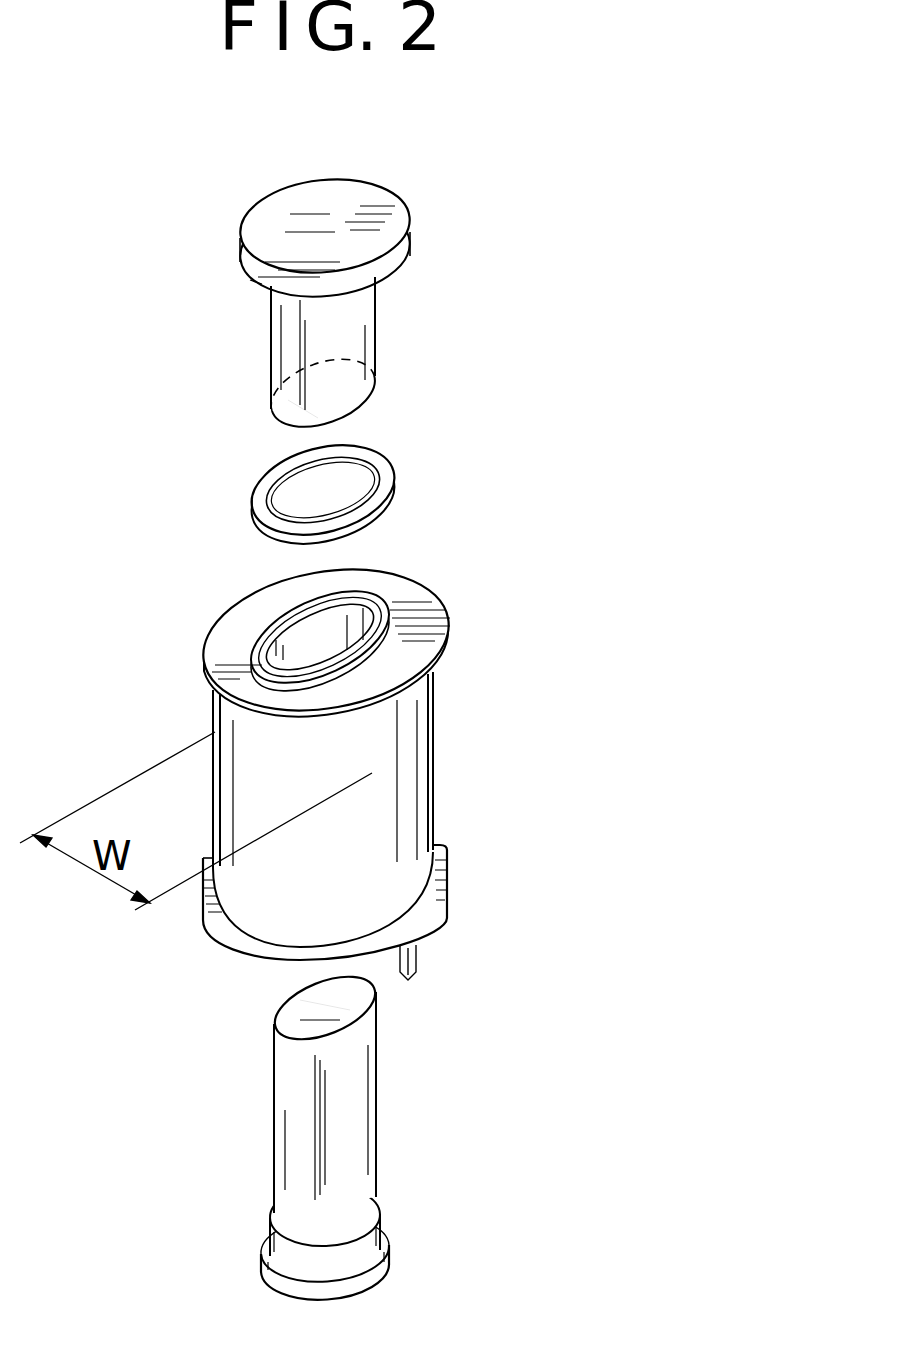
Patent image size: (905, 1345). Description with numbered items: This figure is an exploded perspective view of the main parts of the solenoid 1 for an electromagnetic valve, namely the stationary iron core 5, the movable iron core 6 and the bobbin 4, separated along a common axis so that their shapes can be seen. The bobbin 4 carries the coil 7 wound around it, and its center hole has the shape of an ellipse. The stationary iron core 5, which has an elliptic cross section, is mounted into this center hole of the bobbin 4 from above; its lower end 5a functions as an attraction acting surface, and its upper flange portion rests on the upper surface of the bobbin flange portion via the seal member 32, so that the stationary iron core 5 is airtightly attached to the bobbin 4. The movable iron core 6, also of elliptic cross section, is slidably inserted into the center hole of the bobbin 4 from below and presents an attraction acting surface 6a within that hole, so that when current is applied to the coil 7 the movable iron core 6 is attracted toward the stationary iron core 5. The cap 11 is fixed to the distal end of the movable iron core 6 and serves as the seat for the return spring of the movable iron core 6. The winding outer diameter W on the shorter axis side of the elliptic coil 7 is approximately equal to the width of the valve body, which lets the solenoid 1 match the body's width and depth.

The solenoid 1 is at (580, 304).
The stationary iron core 5 is at (376, 322).
The lower end 5a is at (320, 416).
The seal member 32 is at (392, 477).
The bobbin 4 is at (413, 603).
The coil 7 is at (418, 730).
The movable iron core 6 is at (364, 1110).
The attraction acting surface 6a is at (318, 1013).
The cap 11 is at (390, 1266).